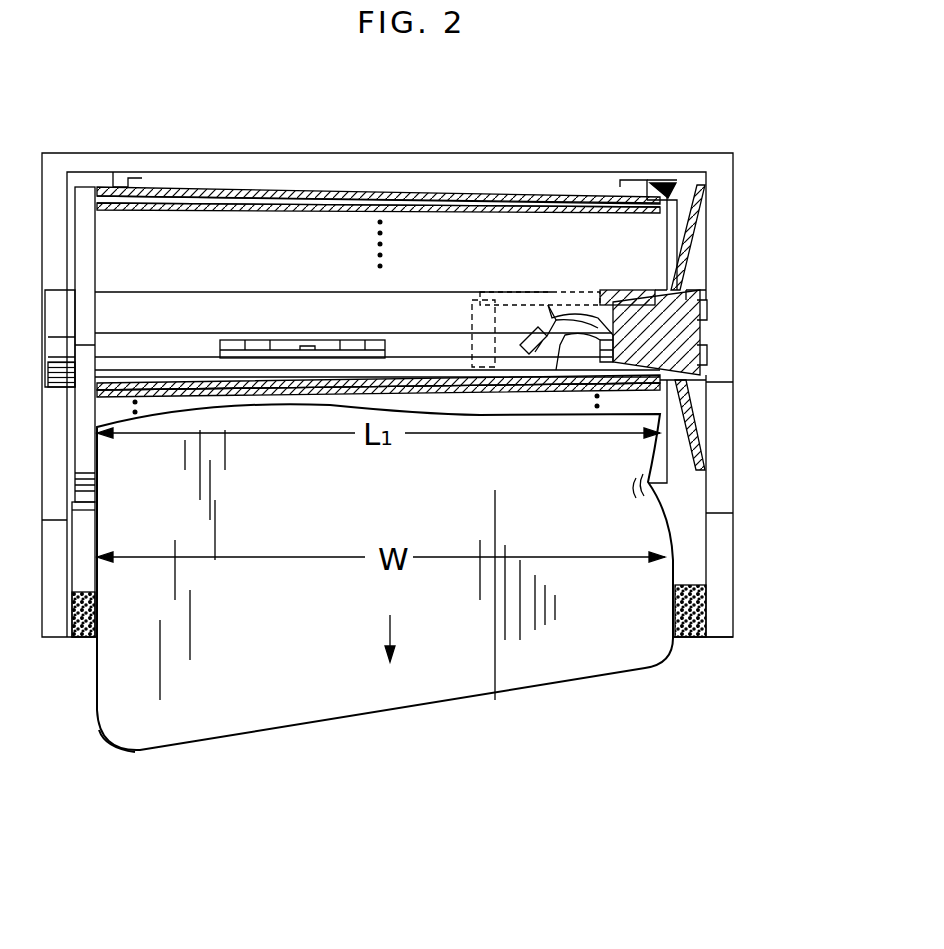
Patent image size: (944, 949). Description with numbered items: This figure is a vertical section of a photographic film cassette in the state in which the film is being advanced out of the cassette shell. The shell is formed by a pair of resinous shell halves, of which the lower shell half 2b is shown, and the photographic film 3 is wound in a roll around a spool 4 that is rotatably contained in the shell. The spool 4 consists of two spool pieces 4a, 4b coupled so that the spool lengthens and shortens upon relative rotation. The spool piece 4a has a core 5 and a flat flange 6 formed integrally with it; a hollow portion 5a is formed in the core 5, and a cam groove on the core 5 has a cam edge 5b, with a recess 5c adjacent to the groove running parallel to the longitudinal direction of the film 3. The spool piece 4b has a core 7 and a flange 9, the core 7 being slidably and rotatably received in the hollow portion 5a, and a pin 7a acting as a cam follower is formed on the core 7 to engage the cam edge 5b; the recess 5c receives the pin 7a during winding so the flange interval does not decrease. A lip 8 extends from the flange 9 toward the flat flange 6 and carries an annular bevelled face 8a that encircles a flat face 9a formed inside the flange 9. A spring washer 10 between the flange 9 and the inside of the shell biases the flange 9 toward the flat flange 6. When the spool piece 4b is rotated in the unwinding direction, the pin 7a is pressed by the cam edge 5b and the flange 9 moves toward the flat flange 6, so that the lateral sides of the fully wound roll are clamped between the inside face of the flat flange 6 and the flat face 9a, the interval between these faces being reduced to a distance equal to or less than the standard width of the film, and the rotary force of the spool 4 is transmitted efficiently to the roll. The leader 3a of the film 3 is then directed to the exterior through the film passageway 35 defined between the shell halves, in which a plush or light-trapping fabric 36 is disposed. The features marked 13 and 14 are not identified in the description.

The shell half 2b is at (735, 462).
The photographic film 3 is at (455, 712).
The leader 3a is at (187, 748).
The spool 4 is at (720, 330).
The spool piece 4a is at (156, 283).
The spool piece 4b is at (645, 280).
The core 5 is at (237, 292).
The hollow portion 5a is at (484, 300).
The cam edge 5b is at (560, 378).
The recess 5c is at (556, 300).
The flat flange 6 is at (83, 187).
The core 7 is at (640, 384).
The pin 7a is at (538, 380).
The lip 8 is at (668, 180).
The bevelled face 8a is at (645, 187).
The flange 9 is at (700, 212).
The flat face 9a is at (660, 253).
The spring washer 10 is at (700, 246).
The notch 13 is at (140, 182).
The stopper 14 is at (605, 180).
The film passageway 35 is at (688, 640).
The light-trapping fabric 36 is at (706, 600).